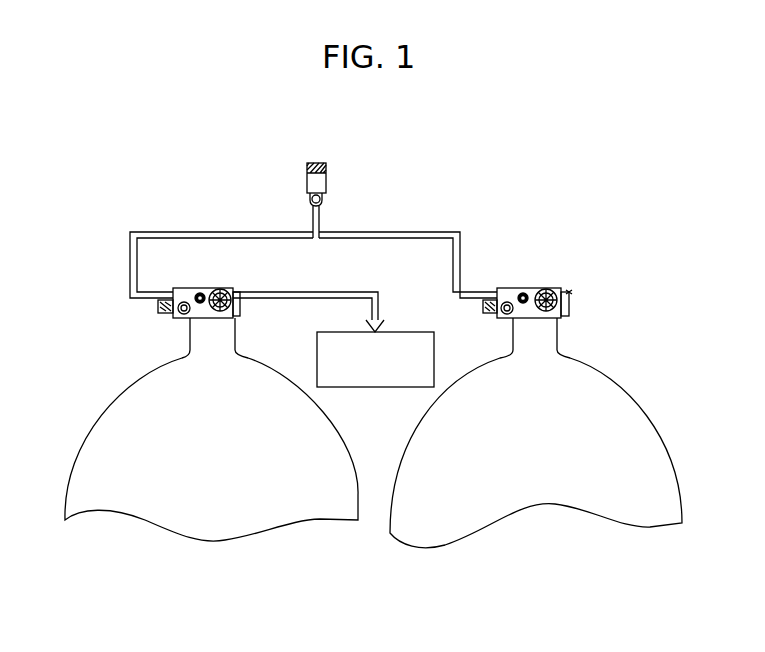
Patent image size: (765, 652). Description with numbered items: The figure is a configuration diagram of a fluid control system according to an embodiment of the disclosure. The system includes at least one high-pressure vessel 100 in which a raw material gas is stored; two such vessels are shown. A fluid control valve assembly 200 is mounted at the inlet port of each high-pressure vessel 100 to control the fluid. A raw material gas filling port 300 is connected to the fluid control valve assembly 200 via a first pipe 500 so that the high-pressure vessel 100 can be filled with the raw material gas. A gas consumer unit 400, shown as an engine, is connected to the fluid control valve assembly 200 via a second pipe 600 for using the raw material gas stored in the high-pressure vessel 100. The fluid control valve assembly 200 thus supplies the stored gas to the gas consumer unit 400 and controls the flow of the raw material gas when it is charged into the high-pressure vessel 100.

The high-pressure vessel 100 is at (118, 390).
The fluid control valve assembly 200 is at (197, 288).
The raw material gas filling port 300 is at (305, 186).
The gas consumer unit 400 is at (407, 332).
The first pipe 500 is at (390, 232).
The second pipe 600 is at (312, 298).